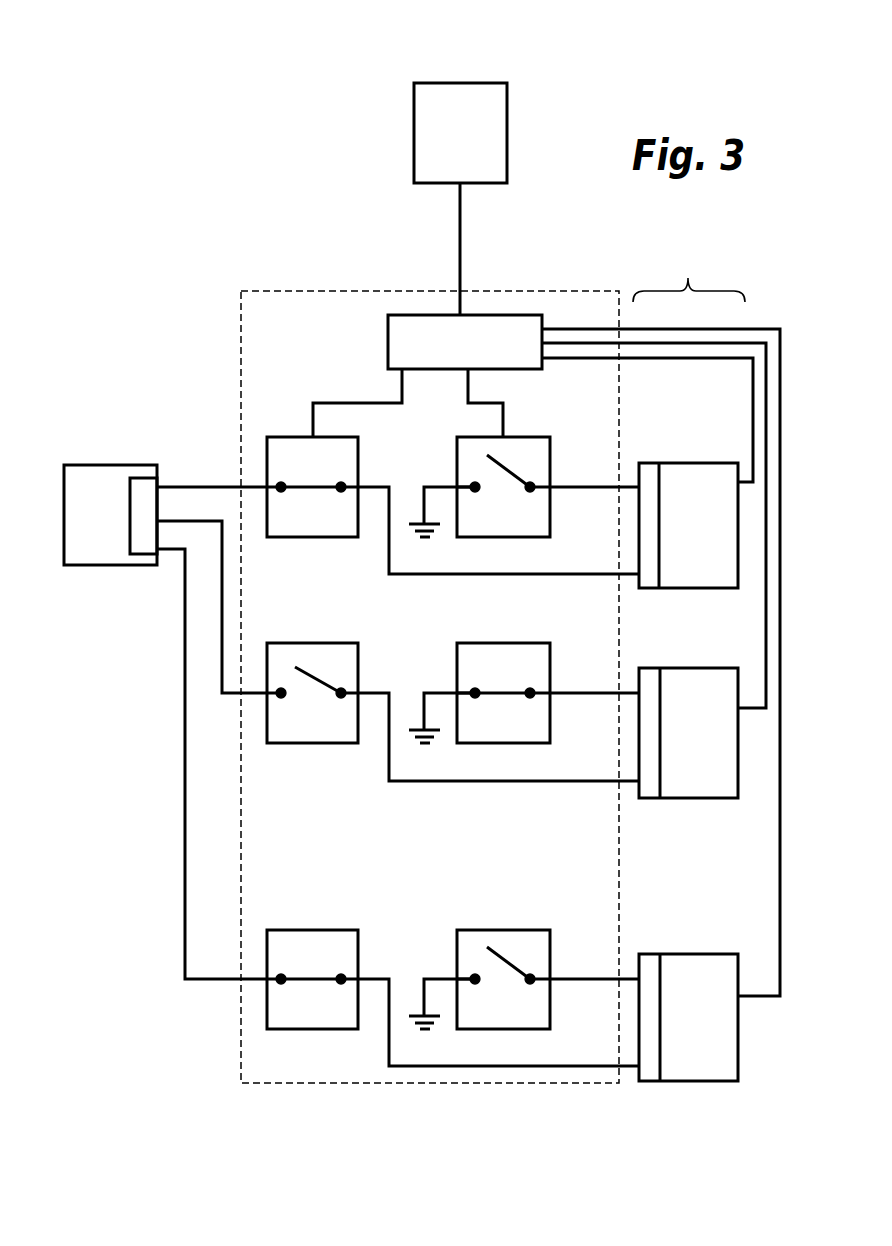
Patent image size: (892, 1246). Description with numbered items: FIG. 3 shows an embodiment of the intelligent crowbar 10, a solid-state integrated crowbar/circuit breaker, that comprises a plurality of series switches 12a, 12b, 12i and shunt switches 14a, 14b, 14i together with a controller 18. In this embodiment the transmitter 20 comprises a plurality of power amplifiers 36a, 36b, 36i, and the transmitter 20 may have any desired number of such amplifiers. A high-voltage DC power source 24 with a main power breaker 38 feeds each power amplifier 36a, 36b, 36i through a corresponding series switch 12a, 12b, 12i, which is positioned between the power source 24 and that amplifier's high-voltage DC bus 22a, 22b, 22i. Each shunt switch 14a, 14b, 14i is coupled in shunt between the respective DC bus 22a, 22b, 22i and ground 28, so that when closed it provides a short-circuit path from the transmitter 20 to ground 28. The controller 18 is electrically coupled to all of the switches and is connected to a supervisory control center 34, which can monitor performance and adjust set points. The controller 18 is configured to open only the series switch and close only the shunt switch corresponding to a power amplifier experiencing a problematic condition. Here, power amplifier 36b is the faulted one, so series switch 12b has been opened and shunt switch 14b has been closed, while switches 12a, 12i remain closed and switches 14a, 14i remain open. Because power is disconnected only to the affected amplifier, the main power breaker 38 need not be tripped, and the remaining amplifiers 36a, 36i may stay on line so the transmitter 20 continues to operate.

The intelligent crowbar 10 is at (241, 335).
The series switch 12a is at (358, 463).
The series switch 12b is at (358, 669).
The series switch 12i is at (358, 955).
The shunt switch 14a is at (552, 461).
The shunt switch 14b is at (552, 667).
The shunt switch 14i is at (552, 954).
The controller 18 is at (388, 339).
The transmitter 20 is at (661, 619).
The high-voltage DC bus 22a is at (660, 537).
The high-voltage DC bus 22b is at (661, 758).
The high-voltage DC bus 22i is at (661, 1043).
The high-voltage DC power source 24 is at (118, 465).
The ground 28 is at (433, 538).
The control center 34 is at (467, 83).
The power amplifier 36a is at (707, 463).
The power amplifier 36b is at (713, 668).
The power amplifier 36i is at (713, 954).
The main power breaker 38 is at (130, 518).